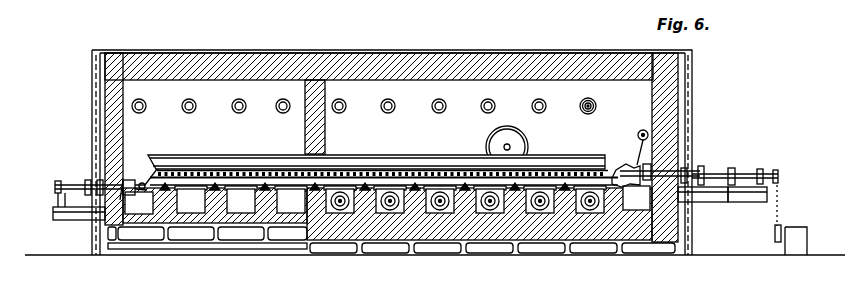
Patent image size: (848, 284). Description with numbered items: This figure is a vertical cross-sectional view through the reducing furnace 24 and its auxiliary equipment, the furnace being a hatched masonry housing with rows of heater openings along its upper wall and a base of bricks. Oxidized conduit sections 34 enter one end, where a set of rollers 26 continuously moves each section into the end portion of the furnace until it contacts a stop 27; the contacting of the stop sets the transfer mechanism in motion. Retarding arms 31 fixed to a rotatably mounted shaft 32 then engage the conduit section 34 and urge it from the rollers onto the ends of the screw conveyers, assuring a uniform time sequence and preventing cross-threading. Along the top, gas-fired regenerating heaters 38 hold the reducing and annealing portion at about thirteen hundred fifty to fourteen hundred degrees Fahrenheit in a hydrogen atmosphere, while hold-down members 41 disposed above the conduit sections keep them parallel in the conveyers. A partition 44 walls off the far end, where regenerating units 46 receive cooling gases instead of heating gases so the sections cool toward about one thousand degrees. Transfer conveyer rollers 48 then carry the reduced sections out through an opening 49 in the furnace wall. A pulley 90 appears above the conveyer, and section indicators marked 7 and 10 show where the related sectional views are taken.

The reducing furnace 24 is at (284, 50).
The rollers 26 is at (636, 198).
The stop 27 is at (636, 166).
The retarding arms 31 is at (640, 140).
The shaft 32 is at (639, 131).
The conduit section 34 is at (163, 166).
The regenerating heaters 38 is at (436, 114).
The hold-down members 41 is at (233, 113).
The partition 44 is at (306, 131).
The regenerating units 46 is at (189, 113).
The transfer conveyer rollers 48 is at (139, 205).
The opening 49 is at (131, 178).
The pulley 90 is at (525, 146).
The section line 7 is at (44, 130).
The section line 10 is at (573, 14).